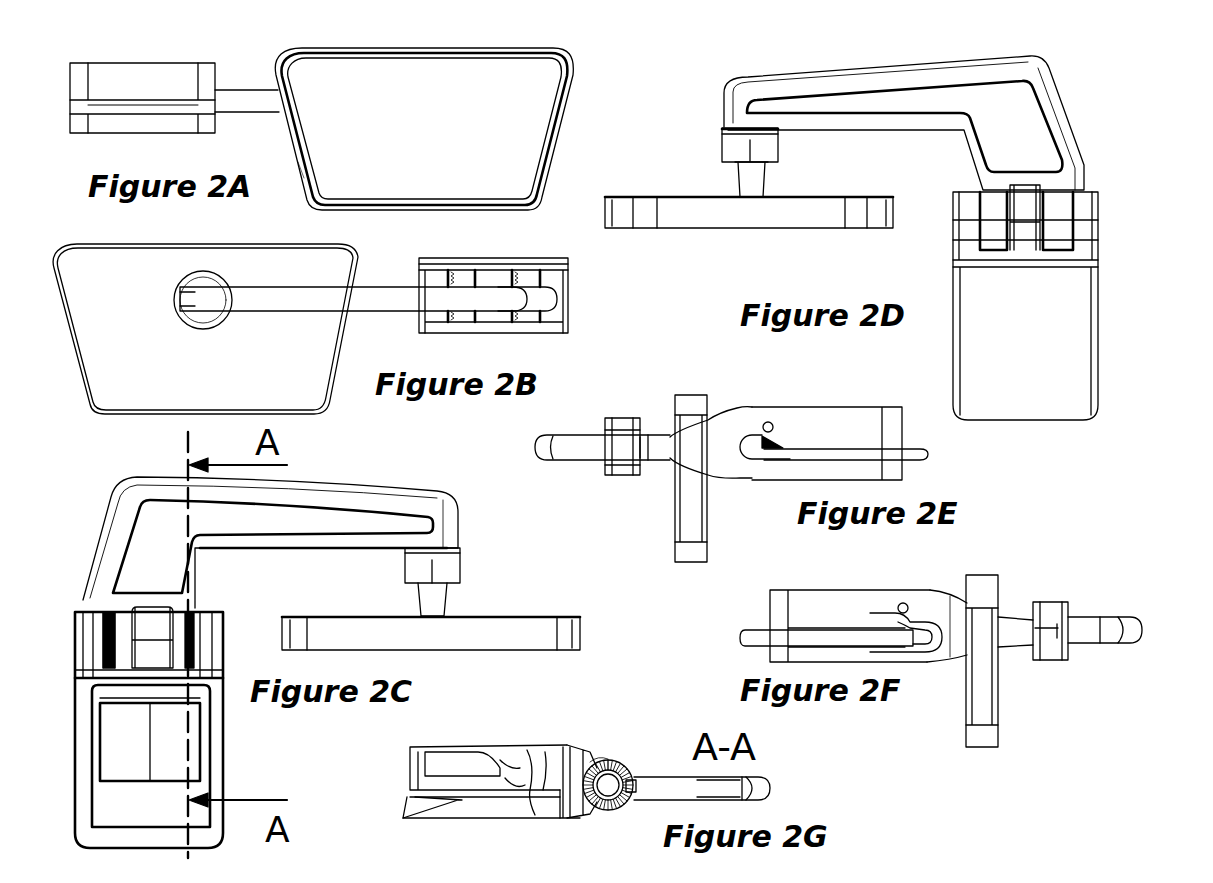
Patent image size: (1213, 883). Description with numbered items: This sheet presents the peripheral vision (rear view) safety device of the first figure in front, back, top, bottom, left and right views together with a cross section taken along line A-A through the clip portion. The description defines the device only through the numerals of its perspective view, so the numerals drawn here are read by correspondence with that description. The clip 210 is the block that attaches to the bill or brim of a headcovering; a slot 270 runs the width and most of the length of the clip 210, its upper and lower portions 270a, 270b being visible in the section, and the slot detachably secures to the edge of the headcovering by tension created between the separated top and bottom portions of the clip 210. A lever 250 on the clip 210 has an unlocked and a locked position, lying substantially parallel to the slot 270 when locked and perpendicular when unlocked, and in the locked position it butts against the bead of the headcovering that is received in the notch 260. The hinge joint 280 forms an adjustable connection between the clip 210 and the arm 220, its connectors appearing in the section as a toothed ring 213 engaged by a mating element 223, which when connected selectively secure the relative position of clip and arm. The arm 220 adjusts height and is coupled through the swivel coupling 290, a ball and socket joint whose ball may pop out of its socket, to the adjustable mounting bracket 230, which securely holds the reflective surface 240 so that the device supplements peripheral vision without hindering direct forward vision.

In FIG. 2A, the mounting base body 210 is at (142, 98).
In FIG. 2B, the mounting base body 210 is at (566, 258).
In FIG. 2C, the mounting base body 210 is at (149, 727).
In FIG. 2D, the mounting base body 210 is at (1025, 302).
In FIG. 2E, the mounting base body 210 is at (827, 443).
In FIG. 2F, the mounting base body 210 is at (850, 626).
In FIG. 2G, the mounting base body 210 is at (491, 781).
In FIG. 2G, the ratchet teeth 213 is at (600, 758).
In FIG. 2A, the arm / lever 220 is at (250, 100).
In FIG. 2B, the arm / lever 220 is at (393, 305).
In FIG. 2C, the arm / lever 220 is at (270, 542).
In FIG. 2D, the arm / lever 220 is at (904, 123).
In FIG. 2E, the arm / lever 220 is at (558, 460).
In FIG. 2F, the arm / lever 220 is at (1112, 645).
In FIG. 2G, the arm / lever 220 is at (775, 788).
In FIG. 2G, the pawl 223 is at (615, 803).
In FIG. 2A, the base plate 230 is at (298, 162).
In FIG. 2B, the base plate 230 is at (205, 329).
In FIG. 2C, the base plate 230 is at (502, 618).
In FIG. 2D, the base plate 230 is at (749, 212).
In FIG. 2E, the base plate 230 is at (686, 520).
In FIG. 2F, the base plate 230 is at (1000, 585).
In FIG. 2A, the frame 240 is at (424, 129).
In FIG. 2C, the latch hook 250 is at (150, 739).
In FIG. 2E, the latch hook 250 is at (758, 455).
In FIG. 2F, the latch hook 250 is at (913, 612).
In FIG. 2G, the latch hook 250 is at (535, 762).
In FIG. 2E, the clamp member 260 is at (743, 421).
In FIG. 2F, the clamp member 260 is at (945, 663).
In FIG. 2G, the clamp member 260 is at (576, 818).
In FIG. 2E, the pin 270 is at (930, 452).
In FIG. 2F, the pin 270 is at (738, 638).
In FIG. 2G, the pin first portion 270a is at (445, 797).
In FIG. 2G, the pin second portion 270b is at (530, 805).
In FIG. 2B, the ratchet gear 280 is at (445, 287).
In FIG. 2C, the ratchet gear 280 is at (100, 635).
In FIG. 2D, the ratchet gear 280 is at (1075, 208).
In FIG. 2G, the ratchet gear 280 is at (623, 767).
In FIG. 2C, the pivot block 290 is at (403, 583).
In FIG. 2D, the pivot block 290 is at (780, 160).
In FIG. 2E, the pivot block 290 is at (622, 446).
In FIG. 2F, the pivot block 290 is at (1050, 660).